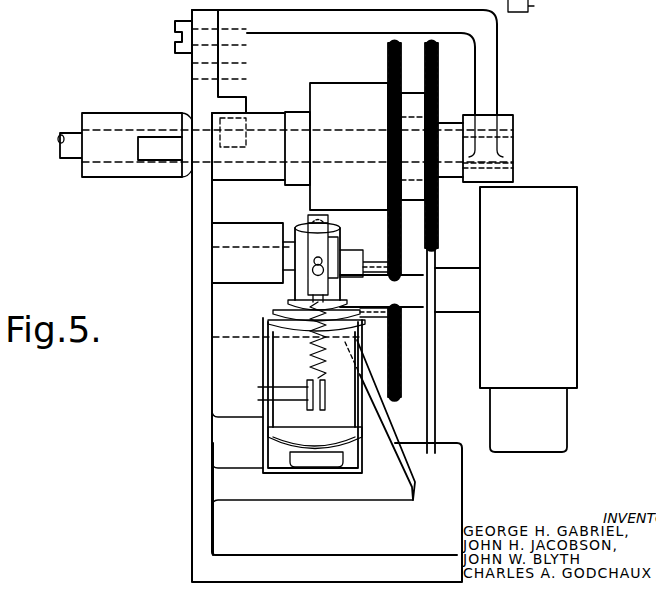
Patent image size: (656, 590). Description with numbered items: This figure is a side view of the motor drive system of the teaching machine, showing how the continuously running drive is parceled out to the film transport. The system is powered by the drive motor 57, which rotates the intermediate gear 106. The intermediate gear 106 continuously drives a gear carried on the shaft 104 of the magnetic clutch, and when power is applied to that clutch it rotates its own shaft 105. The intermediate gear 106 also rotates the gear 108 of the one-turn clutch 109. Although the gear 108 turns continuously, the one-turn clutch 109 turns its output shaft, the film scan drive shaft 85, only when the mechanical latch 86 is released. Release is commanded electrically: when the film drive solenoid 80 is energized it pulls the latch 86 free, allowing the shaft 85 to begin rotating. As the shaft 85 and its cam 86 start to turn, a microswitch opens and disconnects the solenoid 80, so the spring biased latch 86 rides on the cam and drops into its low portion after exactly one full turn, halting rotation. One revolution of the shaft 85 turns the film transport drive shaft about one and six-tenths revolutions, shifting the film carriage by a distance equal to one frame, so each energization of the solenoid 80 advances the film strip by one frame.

The drive motor 57 is at (560, 257).
The film drive solenoid 80 is at (337, 423).
The film scan drive shaft 85 is at (163, 150).
The mechanical latch 86 is at (317, 232).
The shaft 104 is at (534, 8).
The clutch shaft 105 is at (72, 133).
The intermediate gear 106 is at (395, 373).
The gear of one-turn clutch 108 is at (388, 60).
The one-turn clutch 109 is at (333, 100).